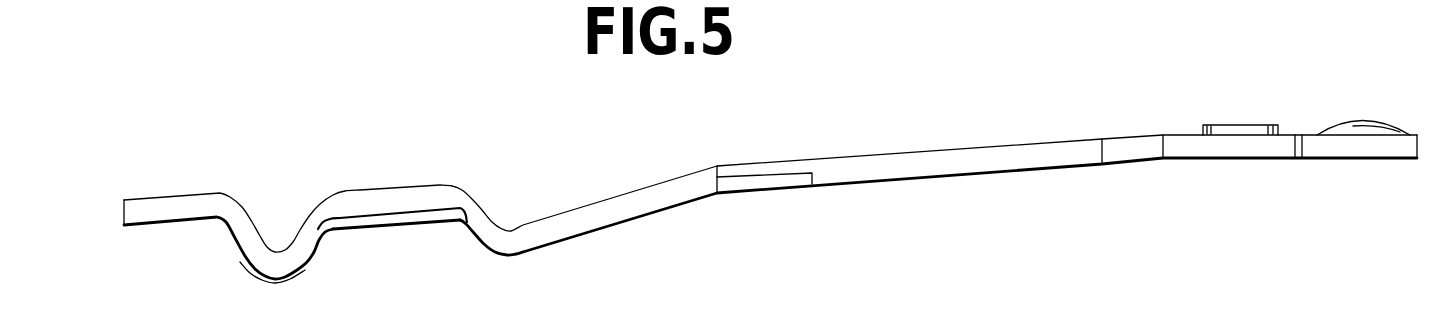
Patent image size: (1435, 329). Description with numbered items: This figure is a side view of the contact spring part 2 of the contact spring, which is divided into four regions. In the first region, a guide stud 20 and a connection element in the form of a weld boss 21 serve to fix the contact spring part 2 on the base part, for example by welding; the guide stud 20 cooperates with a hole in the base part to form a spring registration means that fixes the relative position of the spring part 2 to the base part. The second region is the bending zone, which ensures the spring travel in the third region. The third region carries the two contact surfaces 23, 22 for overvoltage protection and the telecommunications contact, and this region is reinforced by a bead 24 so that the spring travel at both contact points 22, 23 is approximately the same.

The contact spring part 2 is at (919, 133).
The guide stud 20 is at (1250, 130).
The weld boss 21 is at (1367, 122).
The contact surface 22 is at (290, 278).
The contact surface 23 is at (523, 253).
The bead 24 is at (447, 195).